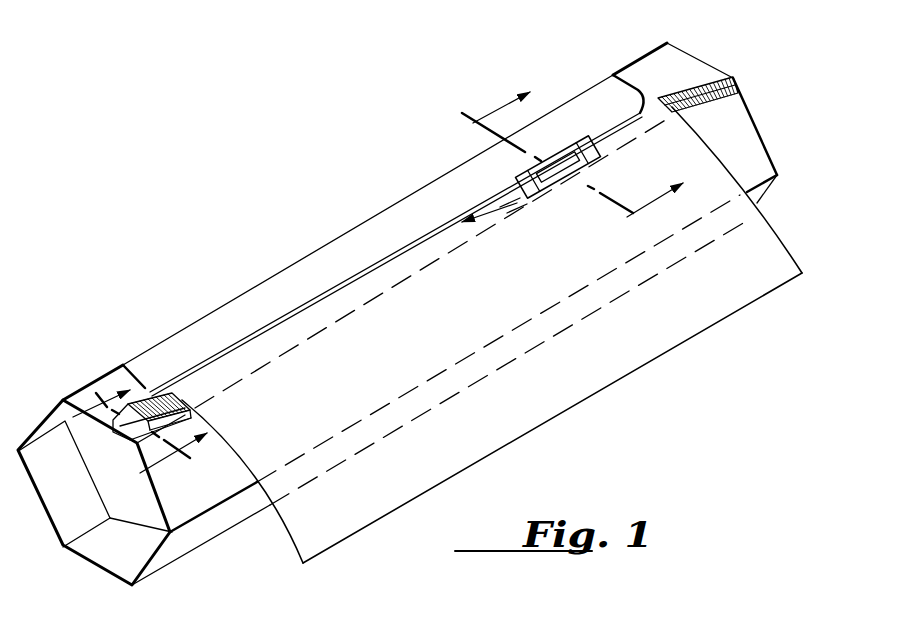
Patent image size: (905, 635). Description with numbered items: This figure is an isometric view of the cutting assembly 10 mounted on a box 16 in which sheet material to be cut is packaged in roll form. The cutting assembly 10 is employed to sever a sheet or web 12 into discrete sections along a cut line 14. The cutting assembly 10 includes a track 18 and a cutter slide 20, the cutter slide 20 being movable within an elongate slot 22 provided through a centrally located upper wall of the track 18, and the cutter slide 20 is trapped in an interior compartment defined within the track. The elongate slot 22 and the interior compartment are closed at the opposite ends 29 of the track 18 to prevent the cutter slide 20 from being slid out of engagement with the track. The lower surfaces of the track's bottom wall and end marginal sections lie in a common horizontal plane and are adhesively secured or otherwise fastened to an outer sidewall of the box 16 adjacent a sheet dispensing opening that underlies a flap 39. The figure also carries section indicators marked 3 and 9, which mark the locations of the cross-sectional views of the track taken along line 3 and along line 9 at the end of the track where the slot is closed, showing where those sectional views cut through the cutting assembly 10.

The cutting assembly 10 is at (726, 63).
The sheet or web 12 is at (728, 295).
The cut line 14 is at (668, 100).
The box 16 is at (63, 400).
The track 18 is at (120, 465).
The cutter slide 20 is at (574, 143).
The elongate slot 22 is at (148, 400).
The opposite ends of the track 29 is at (730, 80).
The flap 39 is at (330, 267).
The section line 3- 3 is at (584, 144).
The section line 9- 9 is at (140, 448).